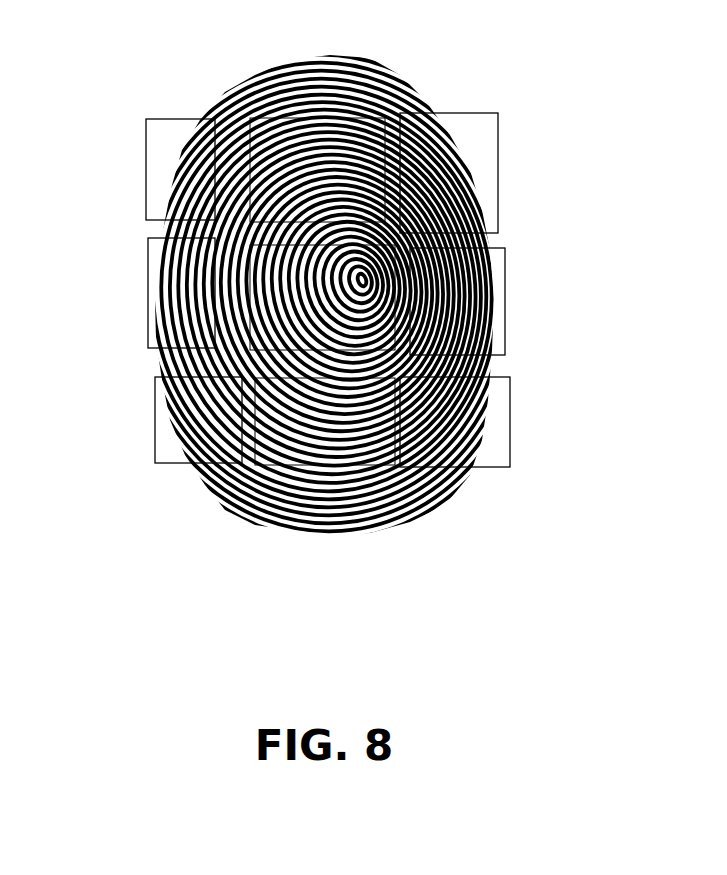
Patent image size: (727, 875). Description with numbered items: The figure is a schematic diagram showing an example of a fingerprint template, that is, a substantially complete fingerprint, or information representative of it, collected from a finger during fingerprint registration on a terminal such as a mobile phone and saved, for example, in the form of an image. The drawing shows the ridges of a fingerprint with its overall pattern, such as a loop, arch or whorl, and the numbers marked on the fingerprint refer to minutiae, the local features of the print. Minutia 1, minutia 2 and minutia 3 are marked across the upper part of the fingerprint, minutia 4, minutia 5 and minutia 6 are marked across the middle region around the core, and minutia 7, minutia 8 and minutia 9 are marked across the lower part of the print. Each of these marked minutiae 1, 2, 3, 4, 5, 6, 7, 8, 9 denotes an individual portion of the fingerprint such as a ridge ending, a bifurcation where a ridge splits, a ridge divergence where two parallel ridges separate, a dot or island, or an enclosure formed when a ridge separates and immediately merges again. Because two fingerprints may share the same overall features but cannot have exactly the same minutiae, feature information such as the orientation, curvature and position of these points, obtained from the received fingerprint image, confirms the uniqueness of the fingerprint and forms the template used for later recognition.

The minutia 1 is at (147, 178).
The minutia 2 is at (340, 120).
The minutia 3 is at (503, 172).
The minutia 4 is at (148, 305).
The minutia 5 is at (427, 508).
The minutia 6 is at (507, 308).
The minutia 7 is at (155, 428).
The minutia 8 is at (323, 463).
The minutia 9 is at (512, 431).